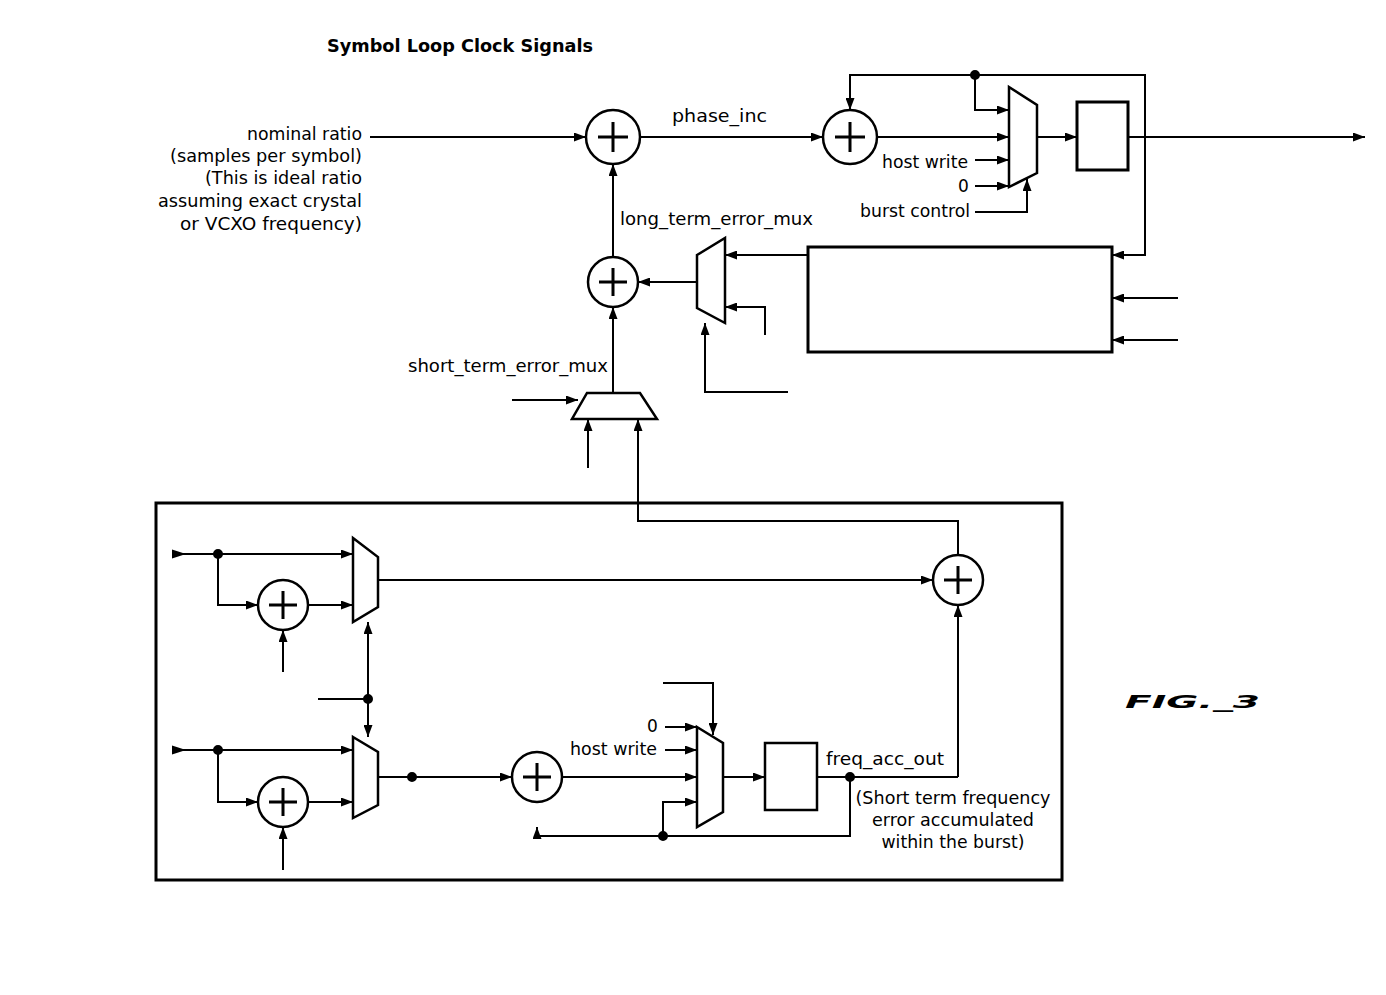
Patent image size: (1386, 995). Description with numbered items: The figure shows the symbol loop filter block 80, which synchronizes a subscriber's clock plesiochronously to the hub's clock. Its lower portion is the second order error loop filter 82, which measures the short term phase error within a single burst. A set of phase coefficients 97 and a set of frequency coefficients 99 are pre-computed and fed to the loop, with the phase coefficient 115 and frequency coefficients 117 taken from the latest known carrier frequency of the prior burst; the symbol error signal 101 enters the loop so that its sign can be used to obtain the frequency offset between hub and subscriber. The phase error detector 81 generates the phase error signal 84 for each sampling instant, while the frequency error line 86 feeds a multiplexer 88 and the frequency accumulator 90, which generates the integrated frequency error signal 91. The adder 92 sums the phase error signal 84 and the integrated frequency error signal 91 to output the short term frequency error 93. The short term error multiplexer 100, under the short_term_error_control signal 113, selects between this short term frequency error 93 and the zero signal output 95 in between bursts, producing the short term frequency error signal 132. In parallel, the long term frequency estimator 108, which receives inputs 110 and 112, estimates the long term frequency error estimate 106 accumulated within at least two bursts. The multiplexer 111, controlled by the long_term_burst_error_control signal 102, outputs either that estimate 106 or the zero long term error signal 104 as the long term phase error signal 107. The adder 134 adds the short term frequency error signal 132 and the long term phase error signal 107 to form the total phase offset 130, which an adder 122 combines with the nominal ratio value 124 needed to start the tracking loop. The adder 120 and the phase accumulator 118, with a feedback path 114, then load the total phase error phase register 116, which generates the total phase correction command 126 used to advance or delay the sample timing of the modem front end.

The symbol loop filter block 80 is at (257, 102).
The nominal ratio value 124 is at (445, 136).
The adder 122 is at (604, 110).
The adder 120 is at (840, 112).
The phase accumulator 118 is at (1020, 95).
The total phase error phase register 116 is at (1117, 170).
The feedback line 114 is at (1147, 182).
The total phase correction command 126 is at (1230, 138).
The long term frequency estimator 108 is at (1048, 246).
The burst signal present input 110 is at (1152, 297).
The nominal ratio input 112 is at (1150, 345).
The total phase offset 130 is at (612, 240).
The adder 134 is at (590, 273).
The short term frequency error signal 132 is at (612, 345).
The multiplexer 111 is at (698, 266).
The long term phase error signal 107 is at (680, 284).
The long term frequency error estimate 106 is at (796, 258).
The zero long term error signal 104 is at (765, 335).
The long_term_burst_error_control signal 102 is at (722, 393).
The short term error multiplexer 100 is at (652, 410).
The short_term_error_control signal 113 is at (545, 402).
The zero signal output 95 is at (590, 452).
The short term frequency error 93 is at (640, 452).
The second order error loop filter 82 is at (987, 515).
The set of phase coefficients 97 is at (207, 556).
The phase coefficient 115 is at (262, 622).
The phase error detector 81 is at (382, 605).
The phase error signal 84 is at (608, 578).
The symbol error signal 101 is at (367, 696).
The set of frequency coefficients 99 is at (207, 752).
The frequency coefficients 117 is at (262, 820).
The frequency error line 86 is at (412, 775).
The multiplexer 88 is at (683, 682).
The frequency accumulator 90 is at (777, 742).
The integrated frequency error signal 91 is at (958, 655).
The adder 92 is at (983, 585).